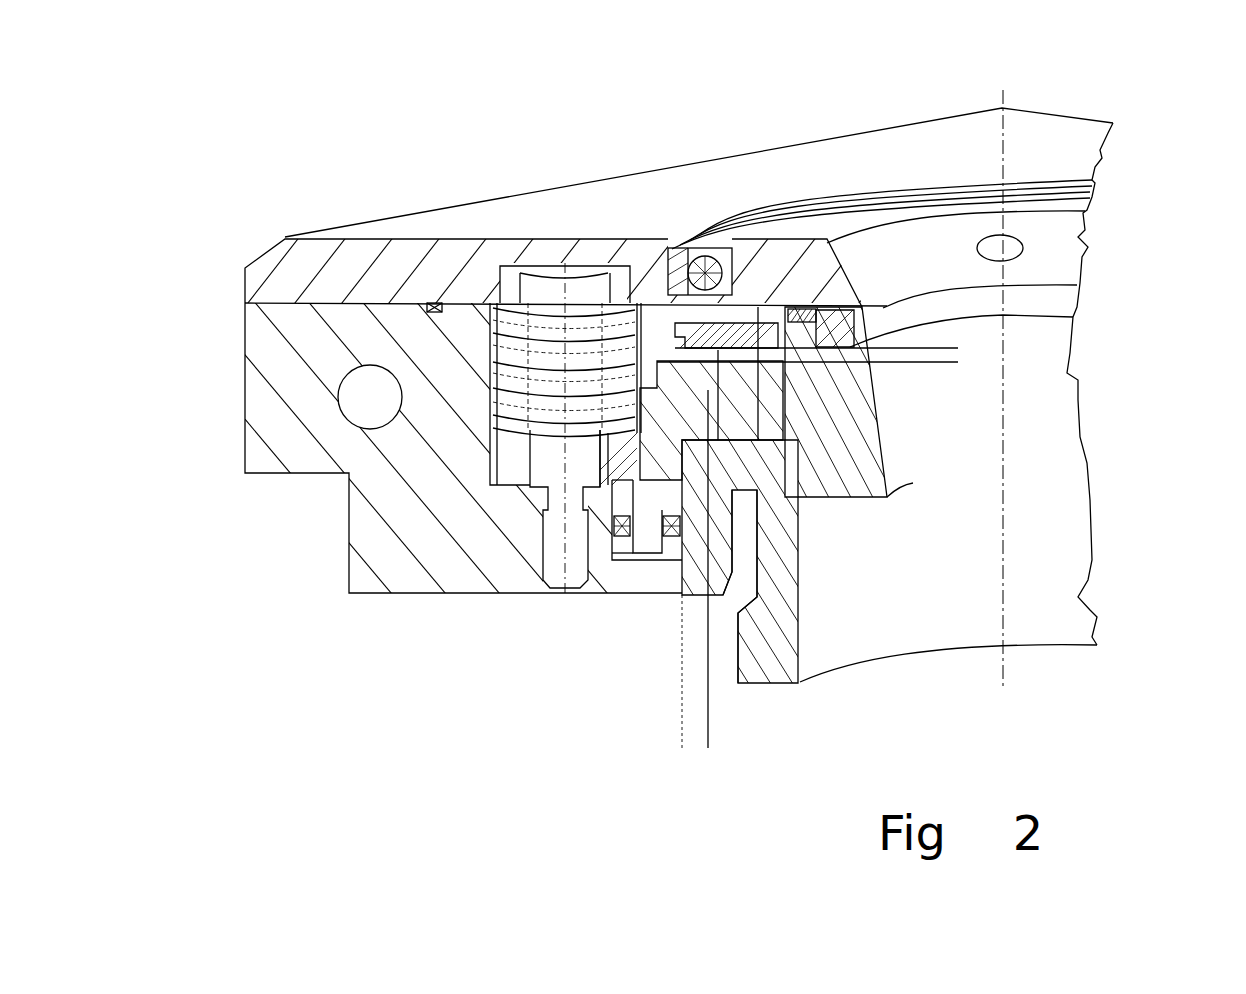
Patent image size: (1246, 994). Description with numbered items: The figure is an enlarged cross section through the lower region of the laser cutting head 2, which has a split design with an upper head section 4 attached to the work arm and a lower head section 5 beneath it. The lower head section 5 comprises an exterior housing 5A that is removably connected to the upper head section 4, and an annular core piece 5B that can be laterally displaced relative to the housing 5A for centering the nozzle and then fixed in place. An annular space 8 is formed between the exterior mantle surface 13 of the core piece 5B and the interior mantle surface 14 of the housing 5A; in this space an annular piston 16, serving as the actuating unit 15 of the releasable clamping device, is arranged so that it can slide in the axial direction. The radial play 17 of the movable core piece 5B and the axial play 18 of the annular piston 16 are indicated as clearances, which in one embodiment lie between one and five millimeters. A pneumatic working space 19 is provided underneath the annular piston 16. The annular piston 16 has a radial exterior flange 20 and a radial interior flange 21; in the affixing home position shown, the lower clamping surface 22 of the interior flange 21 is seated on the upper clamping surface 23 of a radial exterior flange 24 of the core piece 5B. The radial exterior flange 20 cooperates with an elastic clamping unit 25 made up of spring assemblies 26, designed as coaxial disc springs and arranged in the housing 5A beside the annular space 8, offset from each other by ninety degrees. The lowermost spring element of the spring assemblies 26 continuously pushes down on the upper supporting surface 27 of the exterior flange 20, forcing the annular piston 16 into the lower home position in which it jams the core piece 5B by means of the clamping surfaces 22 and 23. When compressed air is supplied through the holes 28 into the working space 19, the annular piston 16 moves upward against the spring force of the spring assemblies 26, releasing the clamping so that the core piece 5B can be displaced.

The laser cutting head 2 is at (425, 190).
The upper head section 4 is at (657, 158).
The lower head section 5 is at (265, 500).
The exterior housing 5A is at (422, 582).
The core piece 5B is at (1047, 453).
The annular space 8 is at (647, 335).
The exterior mantle surface 13 is at (795, 400).
The interior mantle surface 14 is at (625, 562).
The actuating unit 15 is at (665, 262).
The annular piston 16 is at (742, 690).
The radial play 17 is at (722, 733).
The axial play 18 is at (953, 340).
The pneumatic working space 19 is at (668, 562).
The radial exterior flange 20 is at (600, 480).
The radial interior flange 21 is at (748, 388).
The lower clamping surface 22 is at (730, 527).
The upper clamping surface 23 is at (732, 335).
The radial exterior flange 24 is at (782, 497).
The elastic clamping unit 25 is at (503, 460).
The spring assemblies 26 is at (540, 365).
The upper supporting surface 27 is at (608, 380).
The holes 28 is at (648, 565).